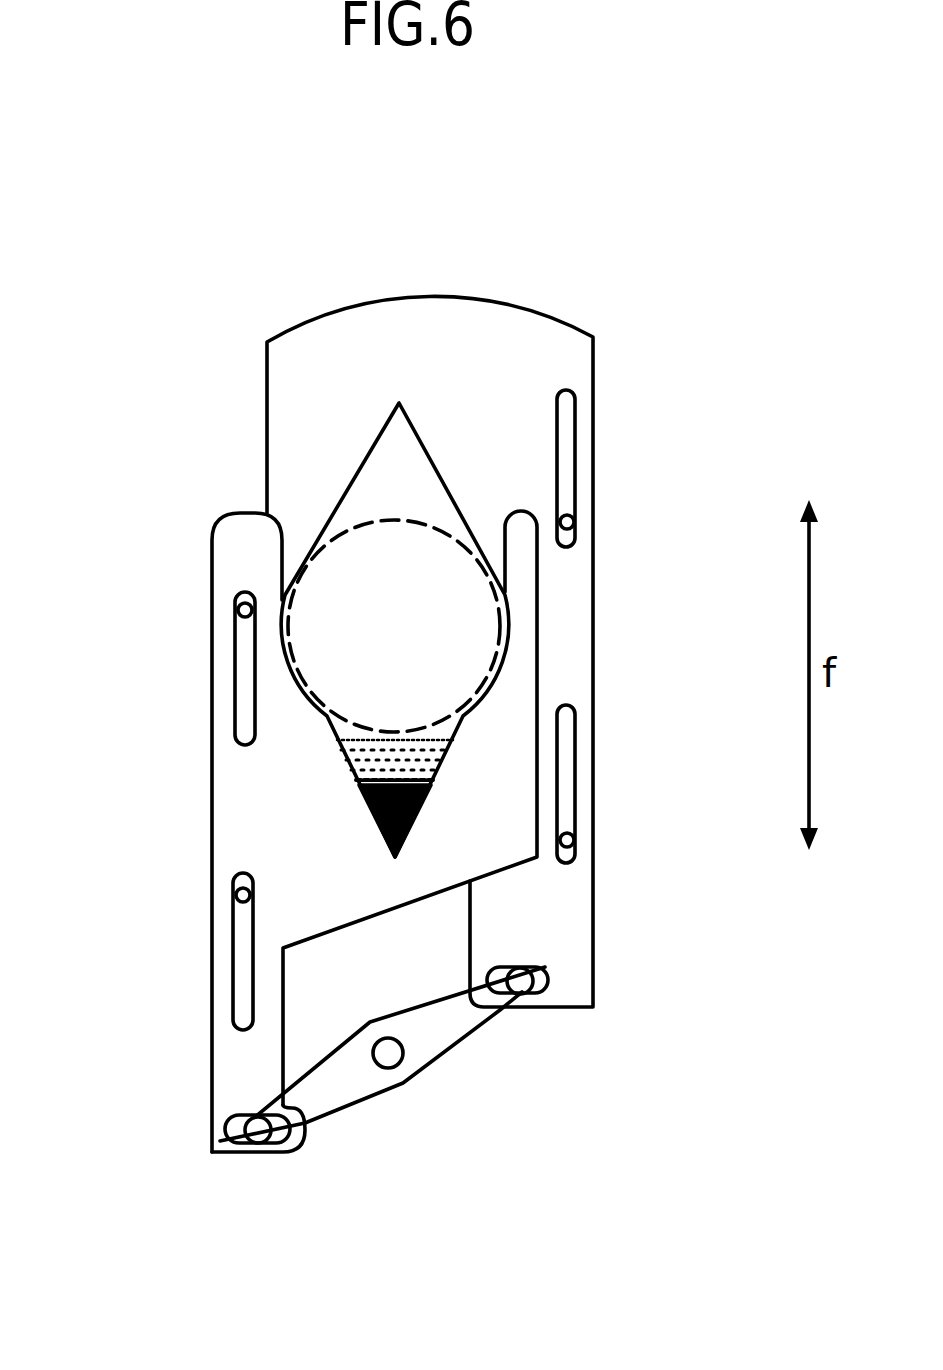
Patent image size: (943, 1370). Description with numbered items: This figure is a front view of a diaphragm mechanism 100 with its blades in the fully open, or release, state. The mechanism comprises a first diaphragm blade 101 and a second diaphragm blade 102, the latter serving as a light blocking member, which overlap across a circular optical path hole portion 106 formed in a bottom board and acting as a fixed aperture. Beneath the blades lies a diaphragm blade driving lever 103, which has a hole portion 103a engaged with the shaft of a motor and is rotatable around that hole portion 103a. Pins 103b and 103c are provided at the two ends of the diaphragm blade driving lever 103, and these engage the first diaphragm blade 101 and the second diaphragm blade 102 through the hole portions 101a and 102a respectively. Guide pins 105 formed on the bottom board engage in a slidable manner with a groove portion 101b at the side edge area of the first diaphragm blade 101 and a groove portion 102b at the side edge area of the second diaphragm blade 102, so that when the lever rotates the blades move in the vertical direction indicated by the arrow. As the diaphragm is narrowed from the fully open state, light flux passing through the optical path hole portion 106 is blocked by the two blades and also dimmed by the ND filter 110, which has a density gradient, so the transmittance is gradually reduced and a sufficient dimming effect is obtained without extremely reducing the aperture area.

The diaphragm mechanism 100 is at (221, 366).
The first diaphragm blade 101 is at (235, 1073).
The hole portion 101a is at (212, 1150).
The groove portion 101b is at (235, 677).
The second diaphragm blade 102 is at (335, 336).
The hole portion 102a is at (550, 978).
The groove portion 102b is at (575, 428).
The diaphragm blade driving lever 103 is at (448, 1037).
The hole portion 103a is at (391, 1058).
The pin 103b is at (258, 1134).
The pin 103c is at (521, 986).
The guide pin 105 is at (240, 608).
The optical path hole portion 106 is at (507, 585).
The ND filter 110 is at (343, 747).